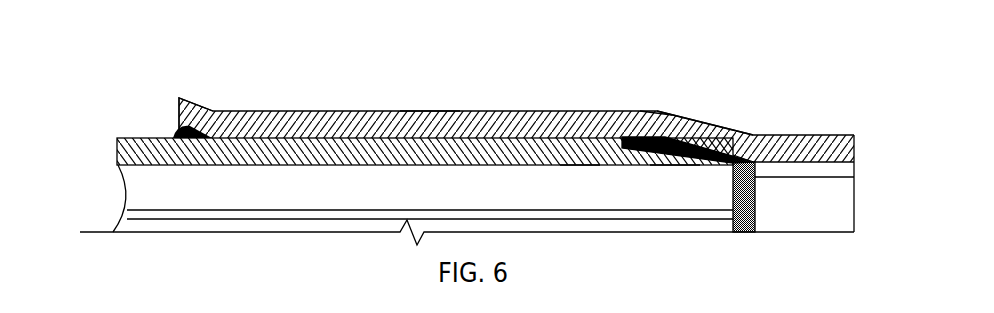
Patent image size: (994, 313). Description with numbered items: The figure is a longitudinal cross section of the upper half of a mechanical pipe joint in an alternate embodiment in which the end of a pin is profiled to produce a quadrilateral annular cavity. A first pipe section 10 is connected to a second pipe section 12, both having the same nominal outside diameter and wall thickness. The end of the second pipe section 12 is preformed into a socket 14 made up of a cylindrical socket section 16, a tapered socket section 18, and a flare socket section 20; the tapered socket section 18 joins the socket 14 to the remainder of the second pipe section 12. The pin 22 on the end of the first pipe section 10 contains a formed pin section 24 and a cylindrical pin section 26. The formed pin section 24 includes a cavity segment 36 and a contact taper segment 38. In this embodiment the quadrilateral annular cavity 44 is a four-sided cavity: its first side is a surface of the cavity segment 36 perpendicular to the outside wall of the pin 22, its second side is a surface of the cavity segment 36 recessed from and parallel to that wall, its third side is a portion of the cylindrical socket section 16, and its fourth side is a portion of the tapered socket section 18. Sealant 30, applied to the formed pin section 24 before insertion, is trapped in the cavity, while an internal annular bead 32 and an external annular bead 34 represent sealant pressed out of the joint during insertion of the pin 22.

The first pipe section 10 is at (128, 138).
The second pipe section 12 is at (808, 152).
The socket 14 is at (428, 80).
The cylindrical socket section 16 is at (341, 111).
The tapered socket section 18 is at (710, 124).
The flare socket section 20 is at (196, 113).
The pin 22 is at (557, 176).
The formed pin section 24 is at (675, 175).
The cylindrical pin section 26 is at (412, 153).
The sealant 30 is at (655, 111).
The internal annular bead 32 is at (744, 160).
The external annular bead 34 is at (177, 128).
The cavity segment 36 is at (641, 143).
The contact taper segment 38 is at (719, 152).
The quadrilateral annular cavity 44 is at (633, 142).